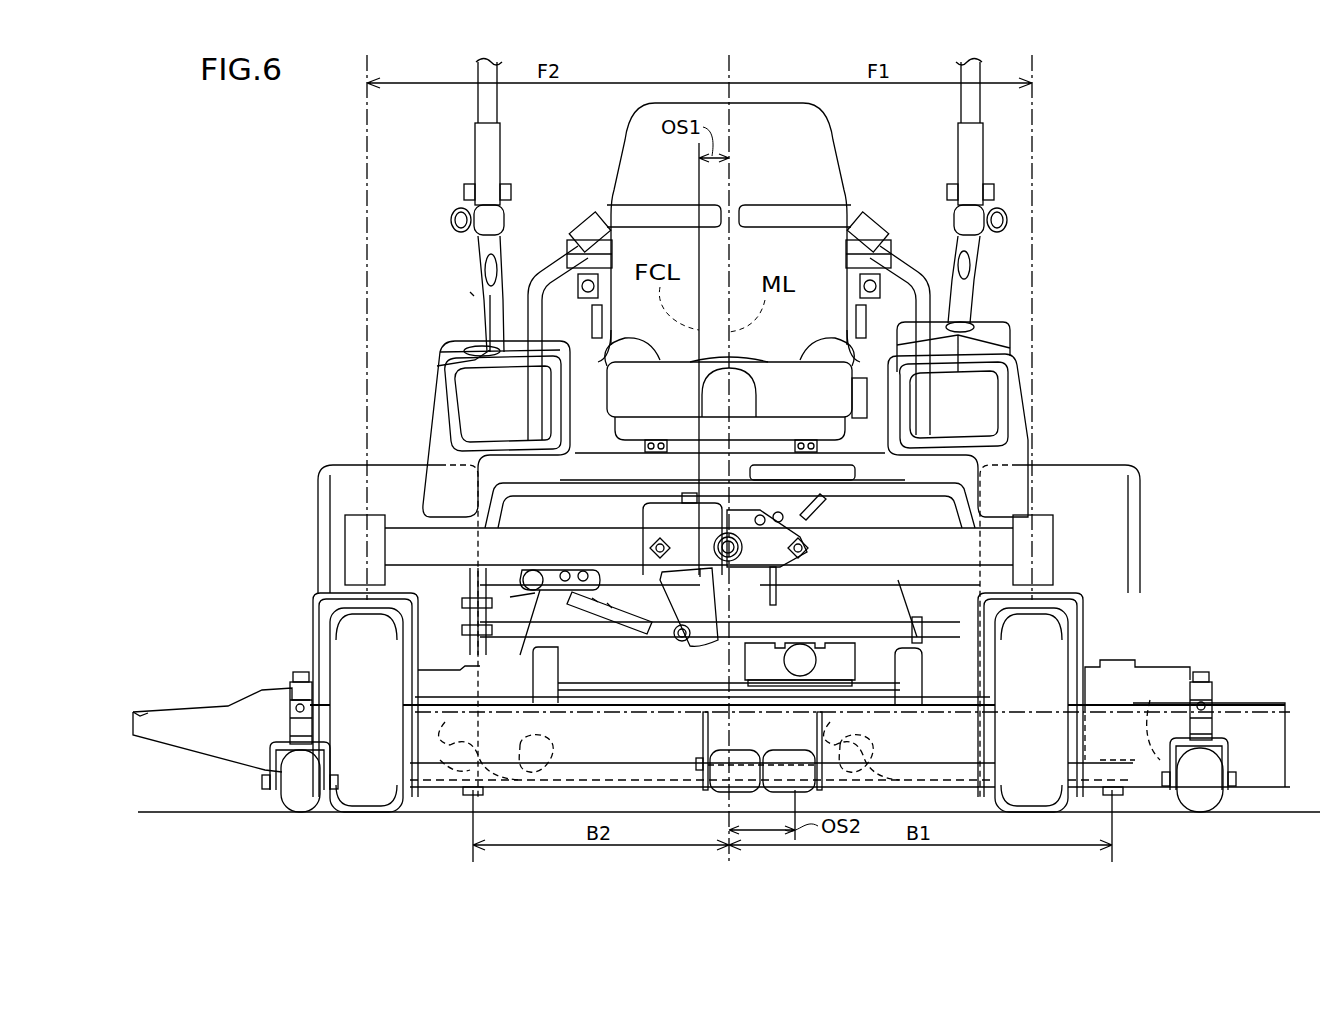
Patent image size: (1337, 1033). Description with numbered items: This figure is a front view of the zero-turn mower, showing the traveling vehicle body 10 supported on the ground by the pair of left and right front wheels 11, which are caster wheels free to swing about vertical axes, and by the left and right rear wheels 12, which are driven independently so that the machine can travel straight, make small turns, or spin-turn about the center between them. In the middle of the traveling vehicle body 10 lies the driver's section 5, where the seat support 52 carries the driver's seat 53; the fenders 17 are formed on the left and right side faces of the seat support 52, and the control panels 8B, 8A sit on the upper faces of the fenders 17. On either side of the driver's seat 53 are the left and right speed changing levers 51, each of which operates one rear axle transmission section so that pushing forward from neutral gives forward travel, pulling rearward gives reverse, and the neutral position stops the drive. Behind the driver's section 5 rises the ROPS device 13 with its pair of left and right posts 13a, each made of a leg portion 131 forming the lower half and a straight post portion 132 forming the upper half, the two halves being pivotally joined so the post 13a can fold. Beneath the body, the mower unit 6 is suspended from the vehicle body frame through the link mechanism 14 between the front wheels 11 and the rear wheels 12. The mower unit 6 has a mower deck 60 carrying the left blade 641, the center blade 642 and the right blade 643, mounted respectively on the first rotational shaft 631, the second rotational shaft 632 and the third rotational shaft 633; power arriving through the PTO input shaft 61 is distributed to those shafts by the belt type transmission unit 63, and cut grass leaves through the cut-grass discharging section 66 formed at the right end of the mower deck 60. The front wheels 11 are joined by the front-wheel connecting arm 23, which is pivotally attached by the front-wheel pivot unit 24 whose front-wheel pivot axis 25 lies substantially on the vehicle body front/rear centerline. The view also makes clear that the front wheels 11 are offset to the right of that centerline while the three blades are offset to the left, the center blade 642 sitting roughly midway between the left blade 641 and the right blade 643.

The driver's section 5 is at (470, 295).
The mower unit 6 is at (1242, 672).
The right fuel tank 8A is at (985, 340).
The left fuel tank 8B is at (470, 345).
The traveling vehicle body 10 is at (294, 531).
The front wheels 11 is at (340, 655).
The rear wheels 12 is at (352, 470).
The ROPS device 13 is at (733, 206).
The posts 13a is at (308, 135).
The leg portion 131 is at (487, 250).
The straight post portion 132 is at (487, 102).
The link mechanism 14 is at (468, 588).
The fenders 17 is at (425, 410).
The front-wheel connecting arm 23 is at (857, 538).
The front-wheel pivot unit 24 is at (666, 589).
The front-wheel pivot axis 25 is at (745, 556).
The speed changing levers 51 is at (597, 218).
The seat support 52 is at (836, 430).
The driver's seat 53 is at (638, 140).
The mower deck 60 is at (1252, 762).
The PTO input shaft 61 is at (748, 660).
The belt type transmission unit 63 is at (877, 668).
The cut-grass discharging section 66 is at (228, 715).
The first rotational shaft 631 is at (1122, 795).
The second rotational shaft 632 is at (800, 792).
The third rotational shaft 633 is at (470, 795).
The left blade 641 is at (1152, 775).
The center blade 642 is at (848, 780).
The right blade 643 is at (530, 770).